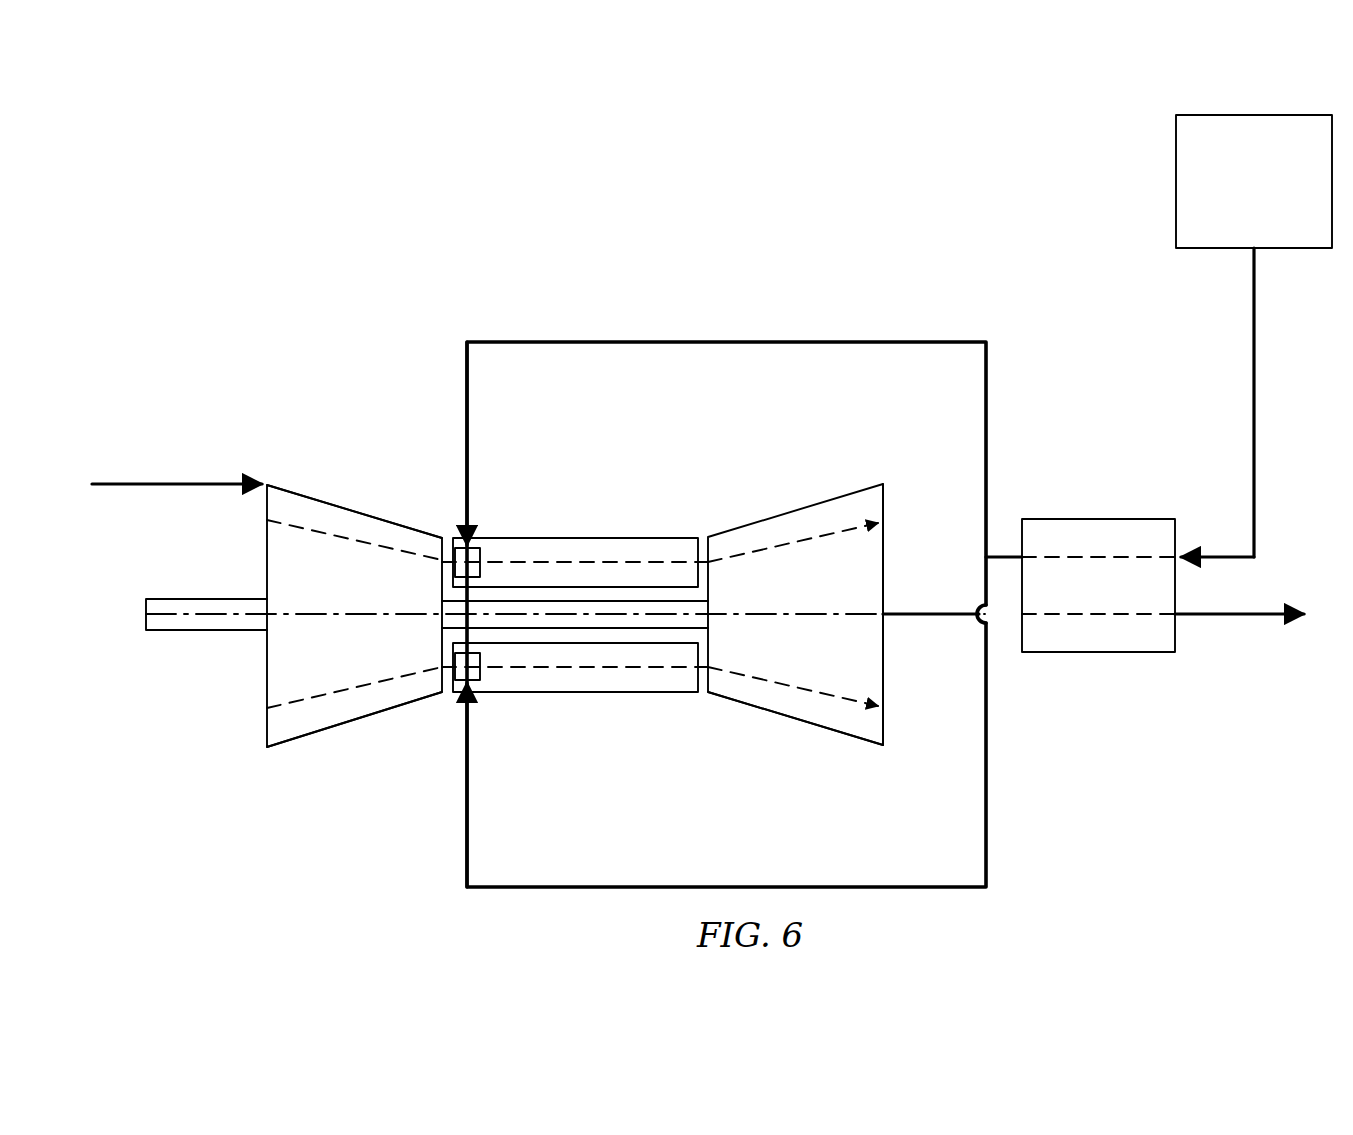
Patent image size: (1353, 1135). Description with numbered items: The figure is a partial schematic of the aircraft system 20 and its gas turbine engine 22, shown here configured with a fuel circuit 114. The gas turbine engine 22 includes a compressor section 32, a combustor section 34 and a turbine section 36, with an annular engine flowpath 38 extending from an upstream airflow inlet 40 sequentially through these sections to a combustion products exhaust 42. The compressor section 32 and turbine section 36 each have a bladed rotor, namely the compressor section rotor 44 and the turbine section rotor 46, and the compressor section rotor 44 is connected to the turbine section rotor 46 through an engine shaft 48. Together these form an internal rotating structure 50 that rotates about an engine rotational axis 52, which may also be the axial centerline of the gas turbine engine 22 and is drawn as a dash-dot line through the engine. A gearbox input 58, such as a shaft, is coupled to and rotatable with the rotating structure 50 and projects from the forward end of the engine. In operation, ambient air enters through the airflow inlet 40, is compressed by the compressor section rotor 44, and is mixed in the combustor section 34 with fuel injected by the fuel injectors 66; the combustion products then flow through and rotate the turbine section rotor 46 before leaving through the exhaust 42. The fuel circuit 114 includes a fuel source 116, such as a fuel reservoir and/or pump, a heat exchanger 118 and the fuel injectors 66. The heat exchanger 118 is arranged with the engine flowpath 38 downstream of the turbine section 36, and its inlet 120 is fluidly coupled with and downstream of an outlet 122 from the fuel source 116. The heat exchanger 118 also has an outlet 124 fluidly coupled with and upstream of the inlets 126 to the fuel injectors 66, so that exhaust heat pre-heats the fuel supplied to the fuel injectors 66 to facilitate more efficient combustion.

The system 20 is at (250, 195).
The gas turbine engine 22 is at (305, 442).
The compressor section 32 is at (355, 497).
The combustor section 34 is at (573, 500).
The turbine section 36 is at (778, 497).
The engine flowpath 38 is at (822, 530).
The airflow inlet 40 is at (92, 484).
The combustion products exhaust 42 is at (1310, 614).
The compressor section rotor 44 is at (265, 668).
The turbine section rotor 46 is at (883, 672).
The engine shaft 48 is at (700, 595).
The rotating structure 50 is at (896, 580).
The engine rotational axis 52 is at (167, 622).
The gearbox input 58 is at (215, 598).
The fuel injector 66 is at (480, 555).
The fuel circuit 114 is at (972, 327).
The fuel source 116 is at (1280, 108).
The heat exchanger 118 is at (1097, 513).
The inlet 120 is at (1175, 557).
The outlet 122 is at (1256, 250).
The outlet 124 is at (1022, 557).
The inlet 126 is at (455, 530).